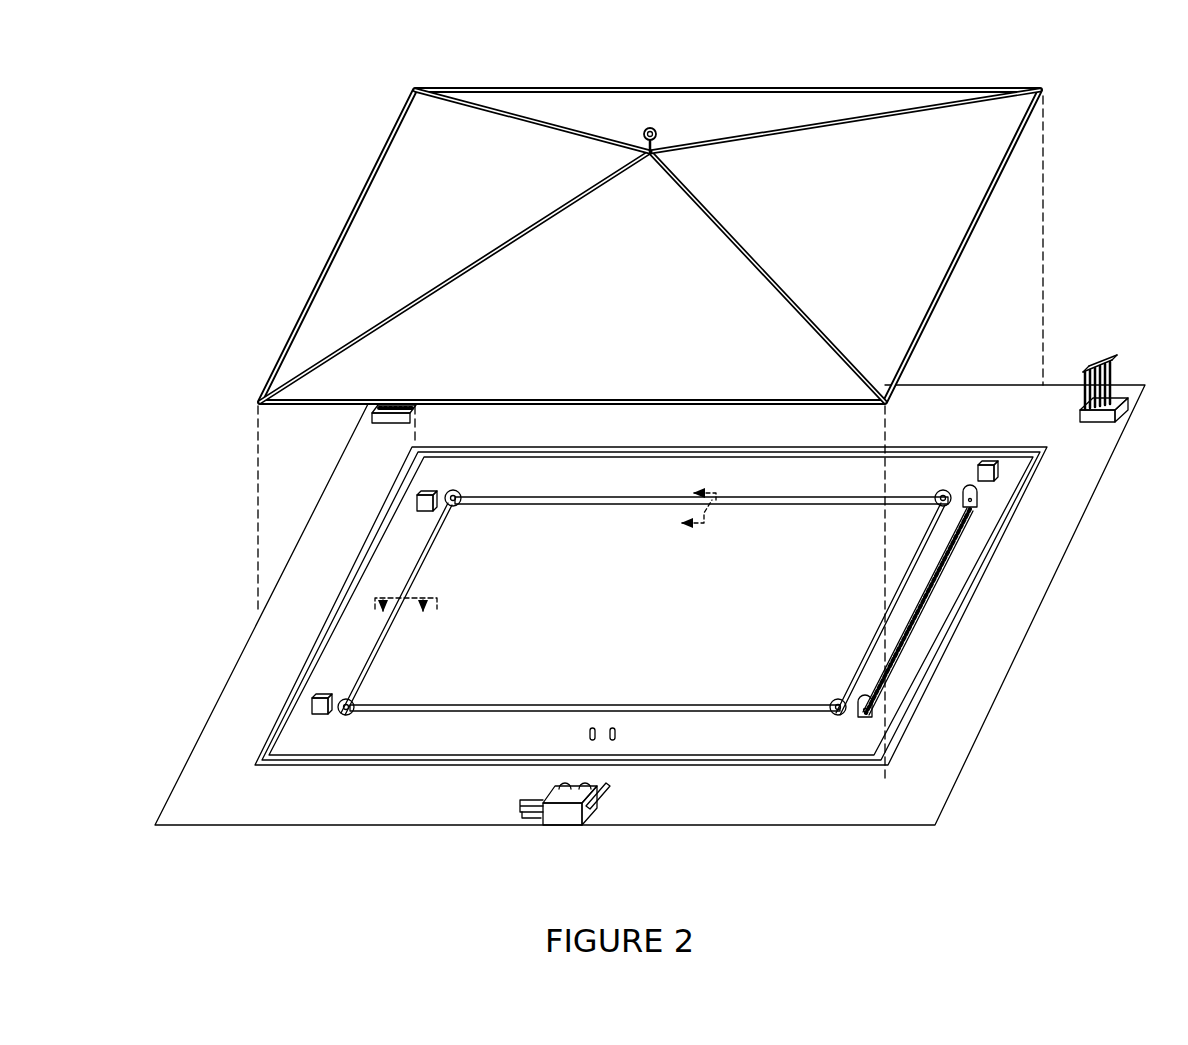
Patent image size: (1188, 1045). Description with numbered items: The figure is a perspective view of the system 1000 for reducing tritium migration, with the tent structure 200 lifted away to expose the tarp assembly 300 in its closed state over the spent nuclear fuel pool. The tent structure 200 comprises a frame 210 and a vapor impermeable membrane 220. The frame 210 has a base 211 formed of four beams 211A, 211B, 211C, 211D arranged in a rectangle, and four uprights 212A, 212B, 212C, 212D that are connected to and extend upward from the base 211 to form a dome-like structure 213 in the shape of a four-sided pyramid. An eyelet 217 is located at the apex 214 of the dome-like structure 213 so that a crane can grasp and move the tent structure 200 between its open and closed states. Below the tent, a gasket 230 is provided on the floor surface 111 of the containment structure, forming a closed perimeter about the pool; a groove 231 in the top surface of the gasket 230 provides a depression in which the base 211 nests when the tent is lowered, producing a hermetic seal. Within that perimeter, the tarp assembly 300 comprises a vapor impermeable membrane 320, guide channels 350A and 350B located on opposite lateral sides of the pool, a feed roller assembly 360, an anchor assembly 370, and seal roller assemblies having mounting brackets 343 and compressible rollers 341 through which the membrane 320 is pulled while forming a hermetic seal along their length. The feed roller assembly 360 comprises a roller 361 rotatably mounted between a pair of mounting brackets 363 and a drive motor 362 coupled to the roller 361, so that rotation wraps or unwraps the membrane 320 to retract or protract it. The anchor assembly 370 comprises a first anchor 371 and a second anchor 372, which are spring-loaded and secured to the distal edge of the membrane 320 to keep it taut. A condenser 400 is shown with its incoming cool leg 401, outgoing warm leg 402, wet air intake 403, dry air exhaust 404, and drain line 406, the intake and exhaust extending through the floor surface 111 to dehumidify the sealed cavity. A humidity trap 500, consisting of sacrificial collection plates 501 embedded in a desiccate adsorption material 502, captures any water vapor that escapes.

The system for reducing tritium migration 1000 is at (263, 80).
The top surface 111 is at (1005, 614).
The tent structure 200 is at (679, 280).
The frame 210 is at (679, 280).
The base 211 is at (932, 331).
The beam 211A is at (1030, 120).
The beam 211B is at (335, 253).
The beam 211C is at (520, 89).
The beam 211D is at (308, 403).
The upright 212A is at (441, 290).
The upright 212B is at (774, 288).
The upright 212C is at (742, 133).
The upright 212D is at (600, 135).
The dome-like structure 213 is at (424, 184).
The apex 214 is at (665, 148).
The eyelet 217 is at (652, 127).
The vapor impermeable membrane 220 is at (385, 220).
The gasket 230 is at (885, 778).
The groove 231 is at (805, 764).
The tarp assembly 300 is at (650, 653).
The vapor impermeable membrane 320 is at (664, 611).
The compressible roller 341 is at (436, 532).
The mounting bracket 343 is at (445, 492).
The guide channel 350A is at (783, 494).
The guide channel 350B is at (688, 716).
The feed roller assembly 360 is at (977, 600).
The roller 361 is at (906, 632).
The drive motor 362 is at (992, 481).
The mounting bracket 363 is at (978, 505).
The anchor assembly 370 is at (327, 609).
The first anchor 371 is at (417, 500).
The second anchor 372 is at (341, 703).
The condenser 400 is at (589, 810).
The incoming cool leg 401 is at (528, 813).
The outgoing warm leg 402 is at (535, 818).
The wet air intake 403 is at (595, 742).
The dry air exhaust 404 is at (614, 742).
The drain line 406 is at (602, 792).
The humidity trap 500 is at (780, 388).
The sacrificial collection plate 501 is at (1116, 372).
The desiccate adsorption material 502 is at (1100, 406).